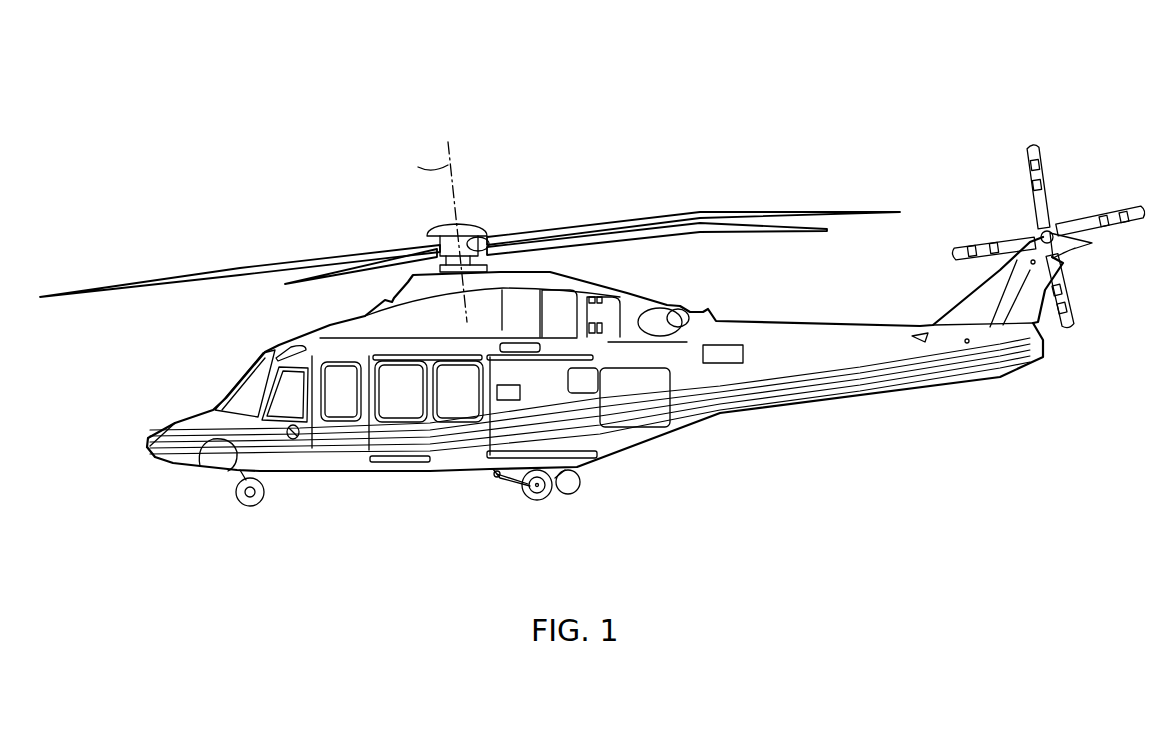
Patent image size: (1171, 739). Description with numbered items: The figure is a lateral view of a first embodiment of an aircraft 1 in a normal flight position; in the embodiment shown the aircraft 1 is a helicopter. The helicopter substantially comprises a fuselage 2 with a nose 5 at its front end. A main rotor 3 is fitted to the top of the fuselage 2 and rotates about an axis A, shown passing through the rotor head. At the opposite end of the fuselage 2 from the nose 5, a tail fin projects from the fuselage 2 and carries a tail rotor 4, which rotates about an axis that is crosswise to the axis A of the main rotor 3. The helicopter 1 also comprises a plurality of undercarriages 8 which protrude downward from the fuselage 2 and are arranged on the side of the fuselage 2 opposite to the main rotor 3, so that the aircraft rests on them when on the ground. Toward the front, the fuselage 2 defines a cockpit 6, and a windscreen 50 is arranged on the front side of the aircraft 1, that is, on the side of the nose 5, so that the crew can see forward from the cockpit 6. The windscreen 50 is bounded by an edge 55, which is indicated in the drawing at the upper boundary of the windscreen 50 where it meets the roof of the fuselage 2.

The aircraft 1 is at (813, 89).
The fuselage 2 is at (817, 333).
The main rotor 3 is at (564, 233).
The tail rotor 4 is at (1085, 229).
The nose 5 is at (201, 419).
The cockpit 6 is at (347, 461).
The undercarriages 8 is at (262, 493).
The windscreen 50 is at (233, 361).
The edge 55 is at (248, 353).
The axis A is at (408, 158).